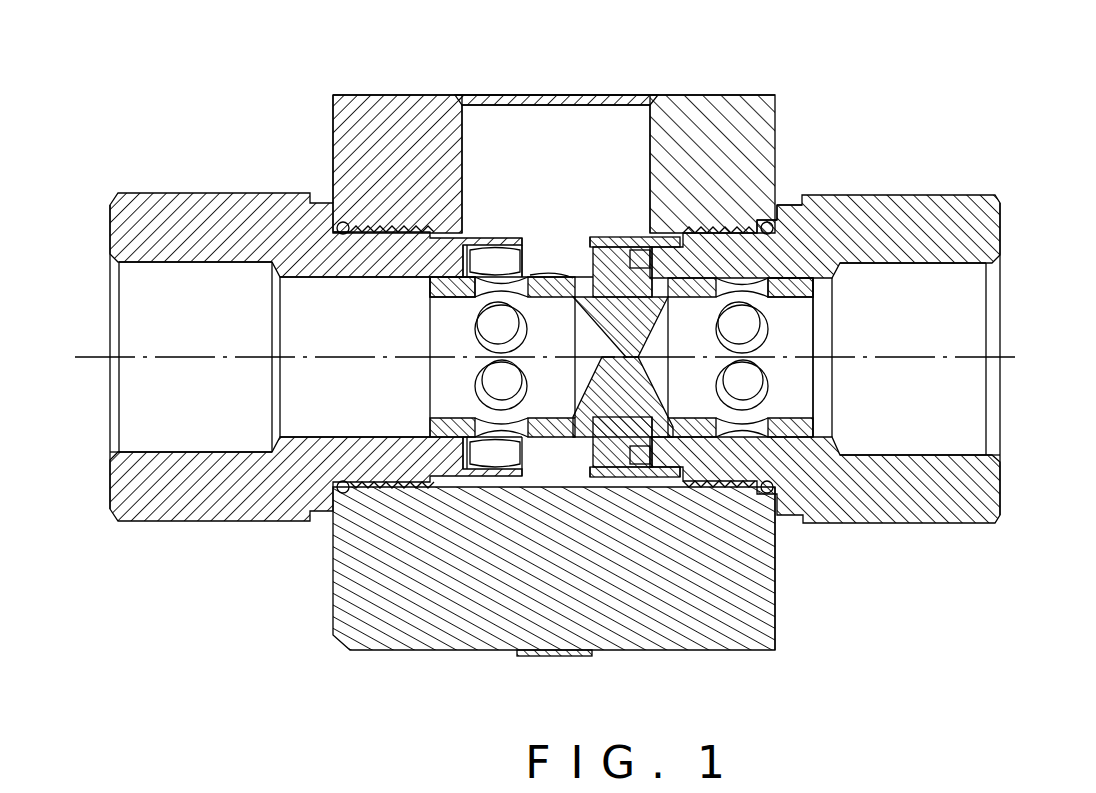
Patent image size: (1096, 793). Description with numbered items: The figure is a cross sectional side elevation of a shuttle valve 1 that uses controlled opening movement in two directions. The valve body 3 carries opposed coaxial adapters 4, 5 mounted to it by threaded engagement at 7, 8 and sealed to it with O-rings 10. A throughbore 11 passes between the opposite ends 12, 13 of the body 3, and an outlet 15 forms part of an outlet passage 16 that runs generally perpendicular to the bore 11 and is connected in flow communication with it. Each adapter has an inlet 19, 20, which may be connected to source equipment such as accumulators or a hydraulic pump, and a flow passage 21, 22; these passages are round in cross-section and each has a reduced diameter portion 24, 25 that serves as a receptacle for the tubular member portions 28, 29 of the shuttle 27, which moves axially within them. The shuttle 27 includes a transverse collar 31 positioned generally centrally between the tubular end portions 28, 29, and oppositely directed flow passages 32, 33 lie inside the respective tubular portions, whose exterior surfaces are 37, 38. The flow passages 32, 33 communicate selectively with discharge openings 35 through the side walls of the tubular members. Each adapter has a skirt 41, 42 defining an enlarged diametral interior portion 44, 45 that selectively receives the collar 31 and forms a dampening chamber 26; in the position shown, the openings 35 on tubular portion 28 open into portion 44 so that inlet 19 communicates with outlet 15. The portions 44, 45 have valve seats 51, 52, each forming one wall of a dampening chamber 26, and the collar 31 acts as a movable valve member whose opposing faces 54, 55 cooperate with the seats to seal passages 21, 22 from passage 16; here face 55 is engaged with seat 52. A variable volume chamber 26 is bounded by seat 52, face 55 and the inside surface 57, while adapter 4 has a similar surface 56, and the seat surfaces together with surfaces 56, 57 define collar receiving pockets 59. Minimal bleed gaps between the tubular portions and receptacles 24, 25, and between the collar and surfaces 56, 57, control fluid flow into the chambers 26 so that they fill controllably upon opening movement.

The valve 1 is at (656, 74).
The valve body 3 is at (400, 95).
The adapter 4 is at (187, 193).
The adapter 5 is at (845, 193).
The threaded engagement 7 is at (385, 230).
The threaded engagement 8 is at (770, 163).
The O-rings 10 is at (343, 538).
The throughbore 11 is at (556, 470).
The end of the body 12 is at (333, 598).
The end of the body 13 is at (780, 598).
The outlet 15 is at (533, 95).
The outlet passage 16 is at (482, 105).
The inlet 19 is at (112, 330).
The inlet 20 is at (1000, 318).
The flow passage 21 is at (150, 452).
The flow passage 22 is at (958, 455).
The reduced diameter portion 24 is at (363, 437).
The reduced diameter portion 25 is at (828, 437).
The dampening chamber 26 is at (770, 145).
The shuttle 27 is at (547, 276).
The tubular member portion 28 is at (432, 290).
The tubular member portion 29 is at (813, 292).
The transverse collar 31 is at (583, 270).
The flow passage 32 is at (455, 330).
The flow passage 33 is at (800, 325).
The discharge openings 35 is at (488, 378).
The exterior surface 37 is at (470, 245).
The exterior surface 38 is at (798, 220).
The skirt 41 is at (478, 245).
The skirt 42 is at (598, 262).
The enlarged diametral interior portion 44 is at (535, 274).
The enlarged diametral interior portion 45 is at (587, 265).
The valve seat 51 is at (472, 578).
The valve seat 52 is at (632, 490).
The face 54 is at (575, 480).
The face 55 is at (700, 490).
The surface 56 is at (508, 578).
The inside surface 57 is at (600, 480).
The collar receiving pockets 59 is at (518, 242).